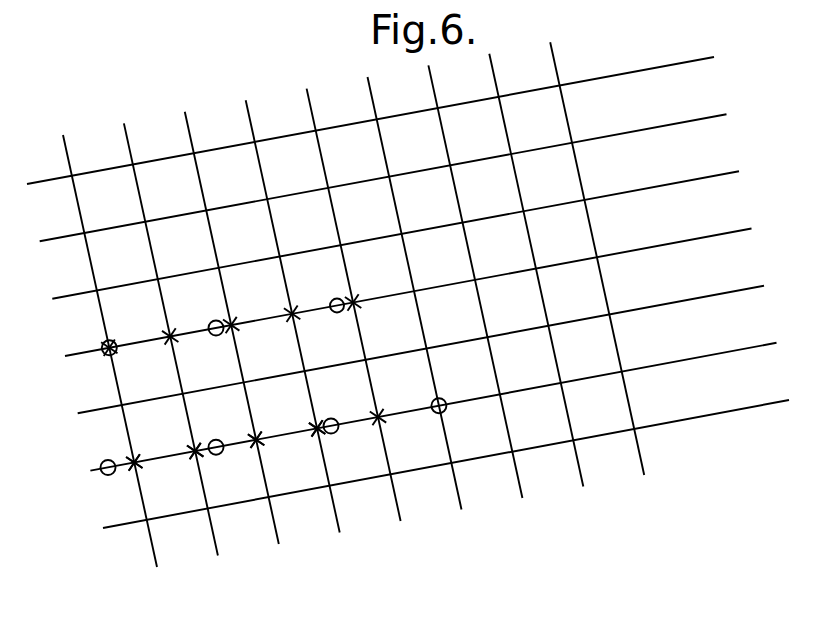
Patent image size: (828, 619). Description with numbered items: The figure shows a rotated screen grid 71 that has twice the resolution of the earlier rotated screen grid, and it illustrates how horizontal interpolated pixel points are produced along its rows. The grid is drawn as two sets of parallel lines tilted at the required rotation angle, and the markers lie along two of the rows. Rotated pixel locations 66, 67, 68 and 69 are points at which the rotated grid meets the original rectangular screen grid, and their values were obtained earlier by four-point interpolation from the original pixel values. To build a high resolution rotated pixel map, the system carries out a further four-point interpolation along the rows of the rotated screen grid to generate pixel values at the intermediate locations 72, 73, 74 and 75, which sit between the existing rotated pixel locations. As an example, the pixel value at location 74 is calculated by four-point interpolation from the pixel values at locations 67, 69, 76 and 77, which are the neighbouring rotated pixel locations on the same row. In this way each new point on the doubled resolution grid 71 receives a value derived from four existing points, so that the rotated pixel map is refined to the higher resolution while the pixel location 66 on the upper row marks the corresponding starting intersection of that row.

The rotated pixel location 66 is at (104, 342).
The rotated pixel location 67 is at (103, 461).
The rotated pixel location 68 is at (212, 321).
The rotated pixel location 69 is at (216, 455).
The rotated screen grid 71 is at (492, 458).
The interpolated pixel location 72 is at (137, 458).
The interpolated pixel location 73 is at (193, 458).
The interpolated pixel location 74 is at (257, 433).
The interpolated pixel location 75 is at (315, 435).
The rotated pixel location 76 is at (329, 418).
The rotated pixel location 77 is at (442, 396).